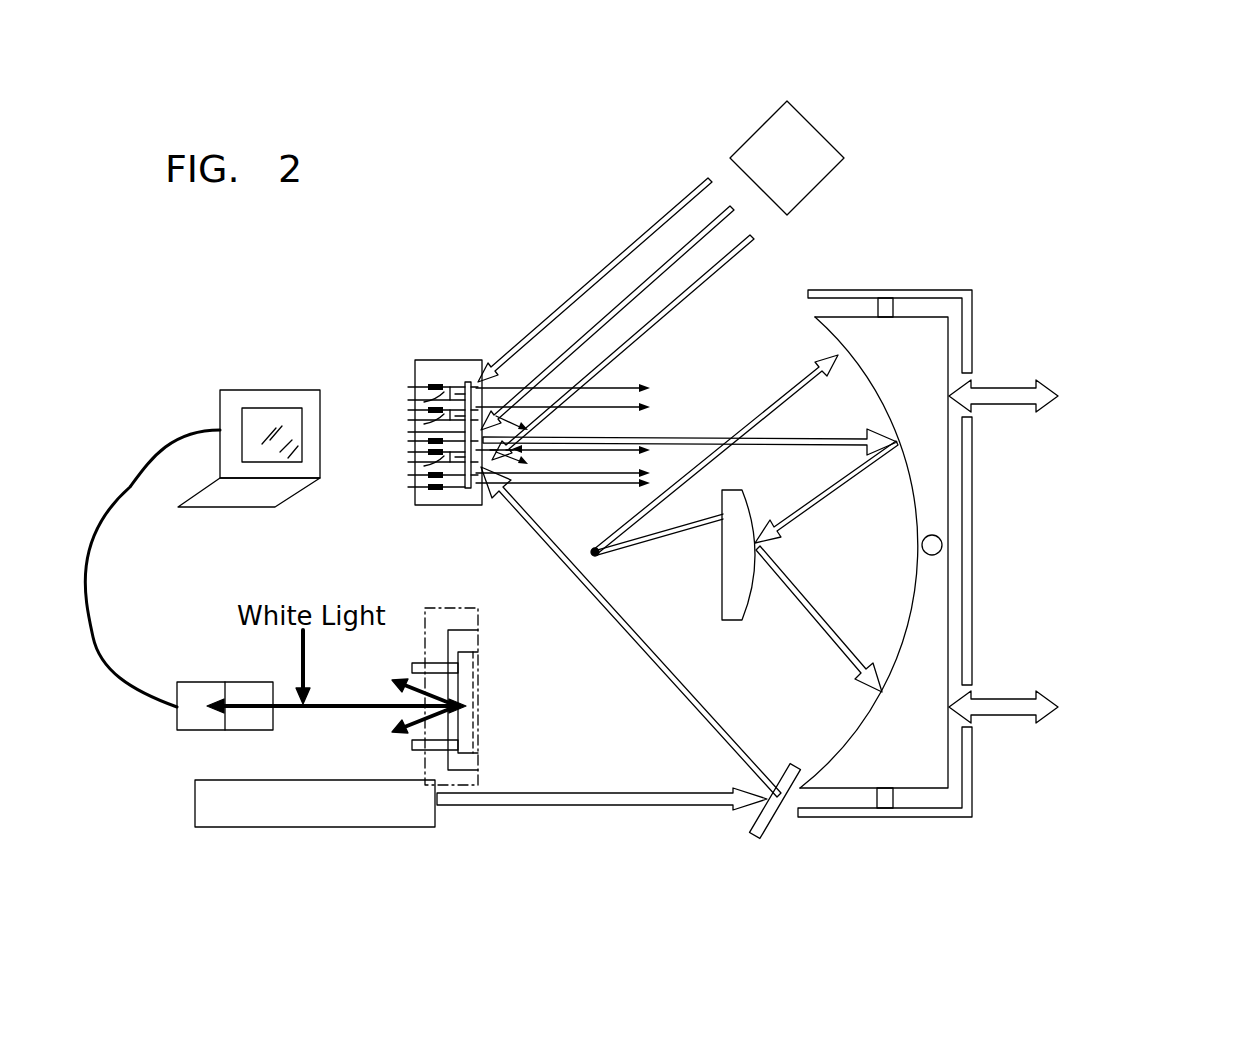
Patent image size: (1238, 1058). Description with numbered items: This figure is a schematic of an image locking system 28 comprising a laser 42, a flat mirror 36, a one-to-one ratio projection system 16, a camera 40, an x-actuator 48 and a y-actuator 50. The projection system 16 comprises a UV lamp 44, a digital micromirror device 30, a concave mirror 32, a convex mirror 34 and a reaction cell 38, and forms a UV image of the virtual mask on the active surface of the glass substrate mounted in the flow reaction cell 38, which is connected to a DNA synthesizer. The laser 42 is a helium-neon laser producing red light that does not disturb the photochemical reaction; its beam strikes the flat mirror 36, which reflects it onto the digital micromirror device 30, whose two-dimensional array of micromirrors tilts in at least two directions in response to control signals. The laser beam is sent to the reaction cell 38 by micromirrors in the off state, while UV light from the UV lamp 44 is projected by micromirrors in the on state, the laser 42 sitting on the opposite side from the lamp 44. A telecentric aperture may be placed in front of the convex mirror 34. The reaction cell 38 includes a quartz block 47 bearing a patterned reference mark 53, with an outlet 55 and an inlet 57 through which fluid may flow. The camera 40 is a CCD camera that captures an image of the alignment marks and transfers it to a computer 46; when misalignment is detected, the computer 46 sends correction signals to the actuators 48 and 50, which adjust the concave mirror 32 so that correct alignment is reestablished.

The 1:1 ratio projection system 16 is at (630, 211).
The image locking system 28 is at (526, 858).
The digital micromirror device 30 is at (450, 362).
The concave mirror 32 is at (943, 603).
The convex mirror 34 is at (720, 578).
The flat mirror 36 is at (782, 822).
The reaction cell 38 is at (433, 667).
The camera 40 is at (200, 680).
The laser 42 is at (195, 800).
The UV lamp 44 is at (823, 146).
The computer 46 is at (295, 497).
The quartz block 47 is at (446, 650).
The x-actuator 48 is at (1018, 380).
The y-actuator 50 is at (1015, 692).
The reference mark 53 is at (470, 705).
The outlet 55 is at (410, 744).
The inlet 57 is at (410, 668).